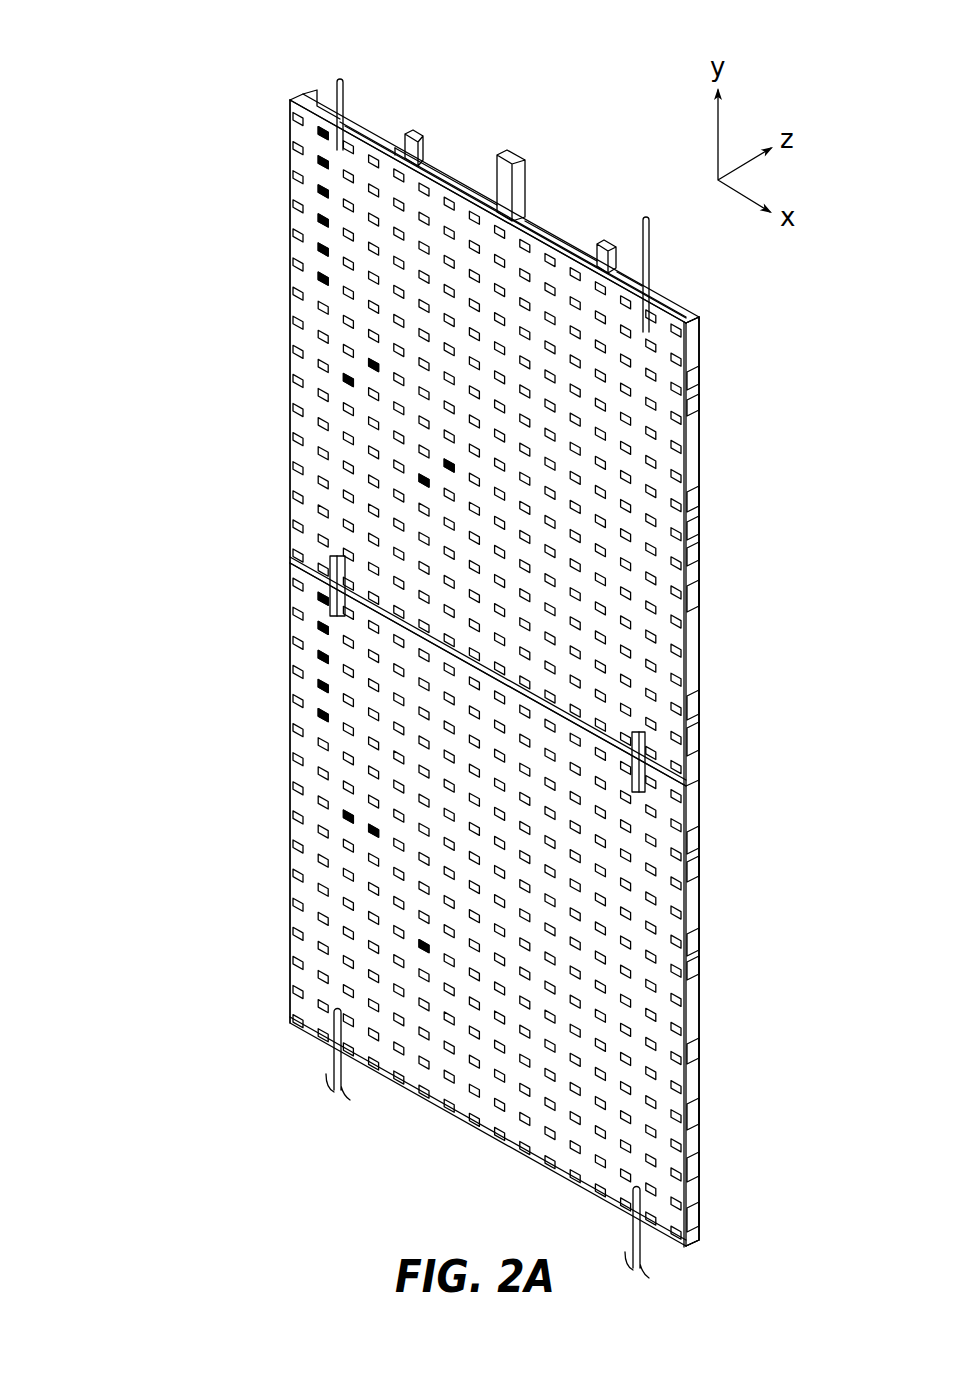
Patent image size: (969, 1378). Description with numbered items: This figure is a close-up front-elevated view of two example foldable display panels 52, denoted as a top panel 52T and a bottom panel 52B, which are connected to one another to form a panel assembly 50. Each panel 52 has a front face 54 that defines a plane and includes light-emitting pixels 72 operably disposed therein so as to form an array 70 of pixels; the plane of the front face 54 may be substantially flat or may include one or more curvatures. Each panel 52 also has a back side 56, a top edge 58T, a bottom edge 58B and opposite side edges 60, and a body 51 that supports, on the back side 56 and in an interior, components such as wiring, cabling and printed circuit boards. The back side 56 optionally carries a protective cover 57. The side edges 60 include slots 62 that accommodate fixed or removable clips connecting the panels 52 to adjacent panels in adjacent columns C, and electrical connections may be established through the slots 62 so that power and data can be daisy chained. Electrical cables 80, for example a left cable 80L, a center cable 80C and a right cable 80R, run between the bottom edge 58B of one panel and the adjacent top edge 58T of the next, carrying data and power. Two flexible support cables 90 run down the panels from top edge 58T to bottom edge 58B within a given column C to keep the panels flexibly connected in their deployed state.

The assembly 50 is at (158, 86).
The foldable panel 52 is at (260, 138).
The top panel 52T is at (290, 212).
The bottom panel 52B is at (290, 645).
The front face 54 is at (312, 293).
The light-emitting pixels 72 is at (345, 375).
The side edges 60 is at (290, 411).
The array of pixels 70 is at (268, 455).
The back side 56 is at (700, 420).
The body 51 is at (700, 340).
The slots 62 is at (700, 385).
The top edge 58T is at (548, 226).
The bottom edge 58B is at (660, 777).
The protective cover 57 is at (447, 161).
The electrical cables 80 is at (398, 108).
The left electrical cable 80L is at (420, 132).
The center electrical cable 80C is at (517, 152).
The right electrical cable 80R is at (612, 242).
The support cables 90 is at (336, 90).
The column C is at (424, 1118).